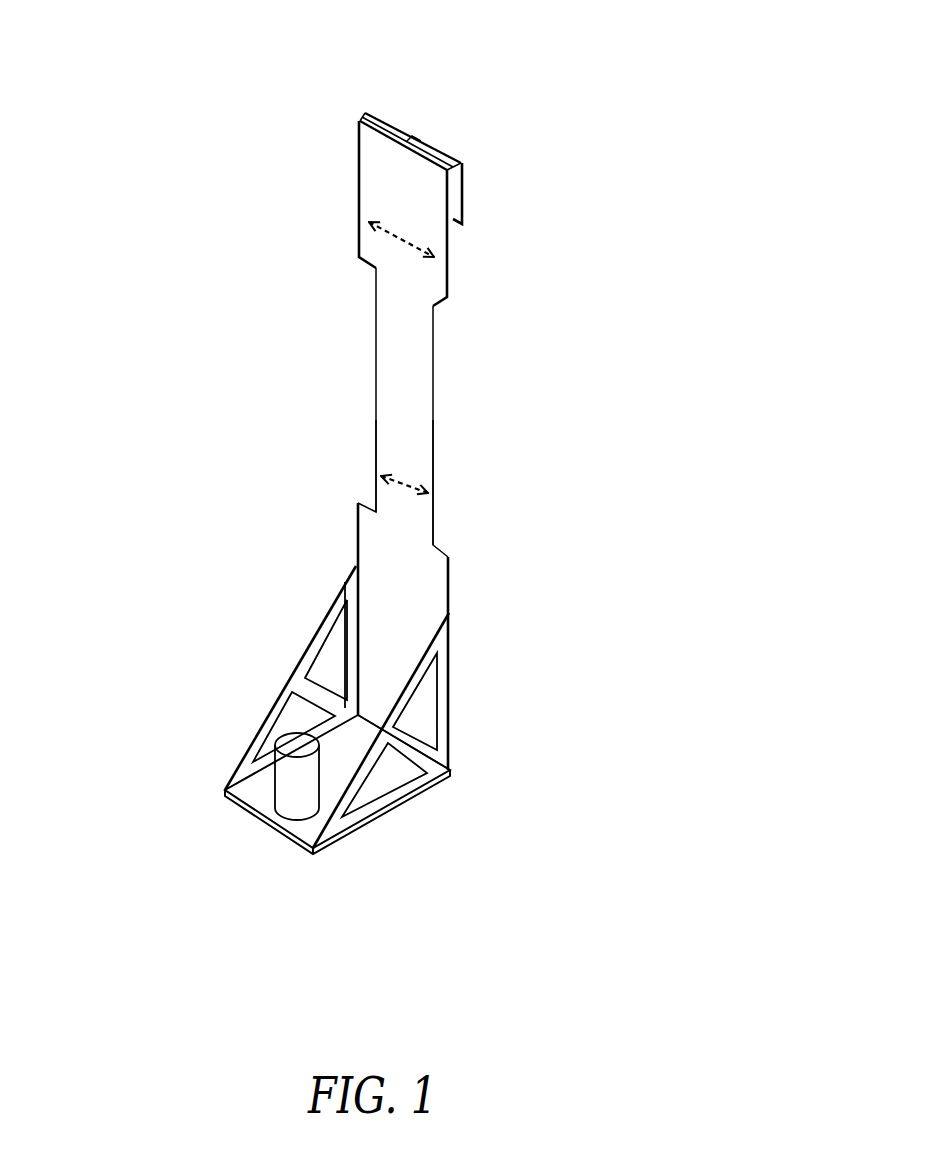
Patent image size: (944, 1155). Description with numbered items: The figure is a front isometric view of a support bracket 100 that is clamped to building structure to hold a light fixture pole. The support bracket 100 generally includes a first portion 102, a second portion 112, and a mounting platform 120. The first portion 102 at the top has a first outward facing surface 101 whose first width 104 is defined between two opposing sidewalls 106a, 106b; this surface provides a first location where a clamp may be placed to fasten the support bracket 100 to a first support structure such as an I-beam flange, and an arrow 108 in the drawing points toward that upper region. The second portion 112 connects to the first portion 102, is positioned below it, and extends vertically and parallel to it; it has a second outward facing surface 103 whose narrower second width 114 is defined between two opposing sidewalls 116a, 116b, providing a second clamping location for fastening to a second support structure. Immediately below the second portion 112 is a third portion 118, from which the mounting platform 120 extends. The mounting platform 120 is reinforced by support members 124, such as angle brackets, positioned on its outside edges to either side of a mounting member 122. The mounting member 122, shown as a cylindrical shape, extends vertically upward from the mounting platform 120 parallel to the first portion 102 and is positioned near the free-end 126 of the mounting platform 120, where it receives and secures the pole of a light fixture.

The support bracket 100 is at (560, 97).
The first outward facing surface 101 is at (385, 170).
The first portion 102 is at (228, 166).
The second outward facing surface 103 is at (405, 348).
The first width 104 is at (408, 244).
The sidewall 106a is at (450, 252).
The sidewall 106b is at (360, 214).
The hook flange 108 is at (508, 184).
The second portion 112 is at (256, 399).
The second width 114 is at (408, 483).
The sidewall 116a is at (433, 438).
The sidewall 116b is at (377, 448).
The third portion 118 is at (283, 563).
The mounting platform 120 is at (312, 825).
The mounting member 122 is at (293, 788).
The support member 124 is at (433, 760).
The free-end 126 is at (227, 798).